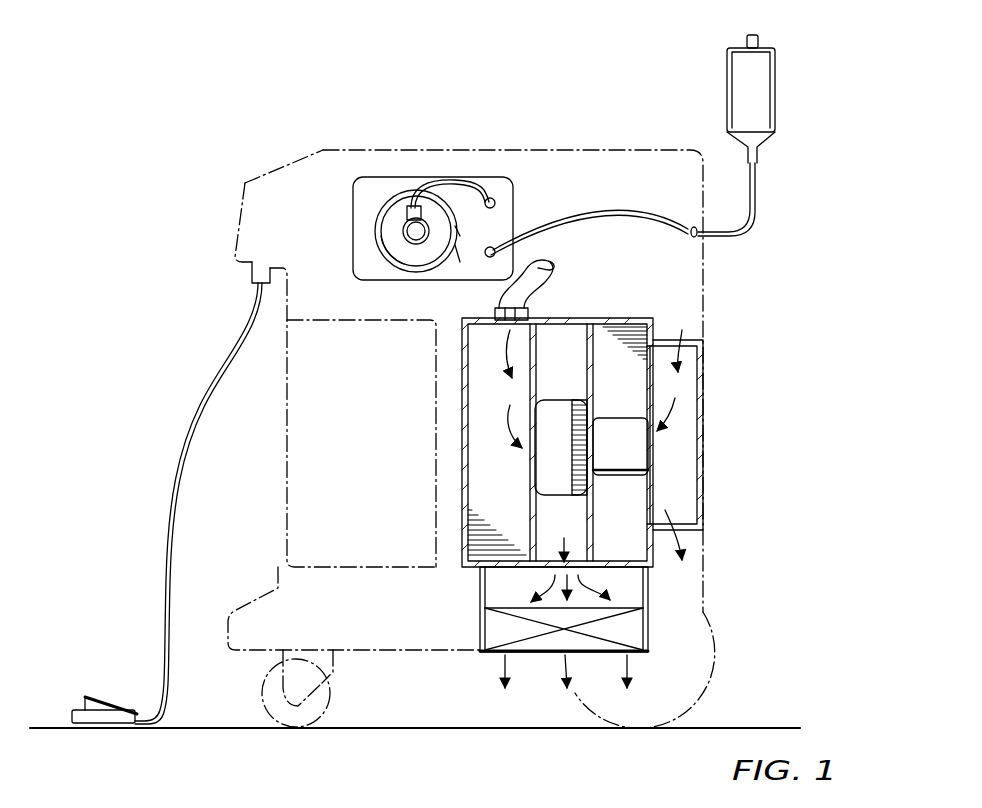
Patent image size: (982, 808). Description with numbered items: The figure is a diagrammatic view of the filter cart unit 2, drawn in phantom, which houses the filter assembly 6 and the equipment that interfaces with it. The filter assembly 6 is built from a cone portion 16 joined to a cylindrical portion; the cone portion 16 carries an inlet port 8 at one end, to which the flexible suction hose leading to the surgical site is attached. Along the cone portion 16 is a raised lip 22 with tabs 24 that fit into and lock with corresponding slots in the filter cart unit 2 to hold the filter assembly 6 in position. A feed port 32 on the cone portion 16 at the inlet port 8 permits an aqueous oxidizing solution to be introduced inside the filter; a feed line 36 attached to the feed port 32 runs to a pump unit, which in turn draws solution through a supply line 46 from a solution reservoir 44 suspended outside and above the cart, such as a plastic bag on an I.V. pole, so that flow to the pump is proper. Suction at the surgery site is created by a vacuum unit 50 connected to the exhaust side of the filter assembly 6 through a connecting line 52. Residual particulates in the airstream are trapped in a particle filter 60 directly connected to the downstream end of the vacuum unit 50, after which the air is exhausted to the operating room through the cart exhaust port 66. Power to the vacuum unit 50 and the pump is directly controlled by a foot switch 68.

The filter cart unit 2 is at (823, 286).
The filter assembly 6 is at (378, 223).
The inlet port 8 is at (402, 229).
The cone portion 16 is at (392, 244).
The raised lip 22 is at (475, 229).
The tabs 24 is at (475, 265).
The feed port 32 is at (411, 200).
The feed line 36 is at (452, 186).
The solution reservoir 44 is at (757, 90).
The supply line 46 is at (660, 228).
The vacuum unit 50 is at (622, 420).
The connecting line 52 is at (553, 276).
The particle filter 60 is at (500, 632).
The cart exhaust port 66 is at (545, 655).
The foot switch 68 is at (118, 700).